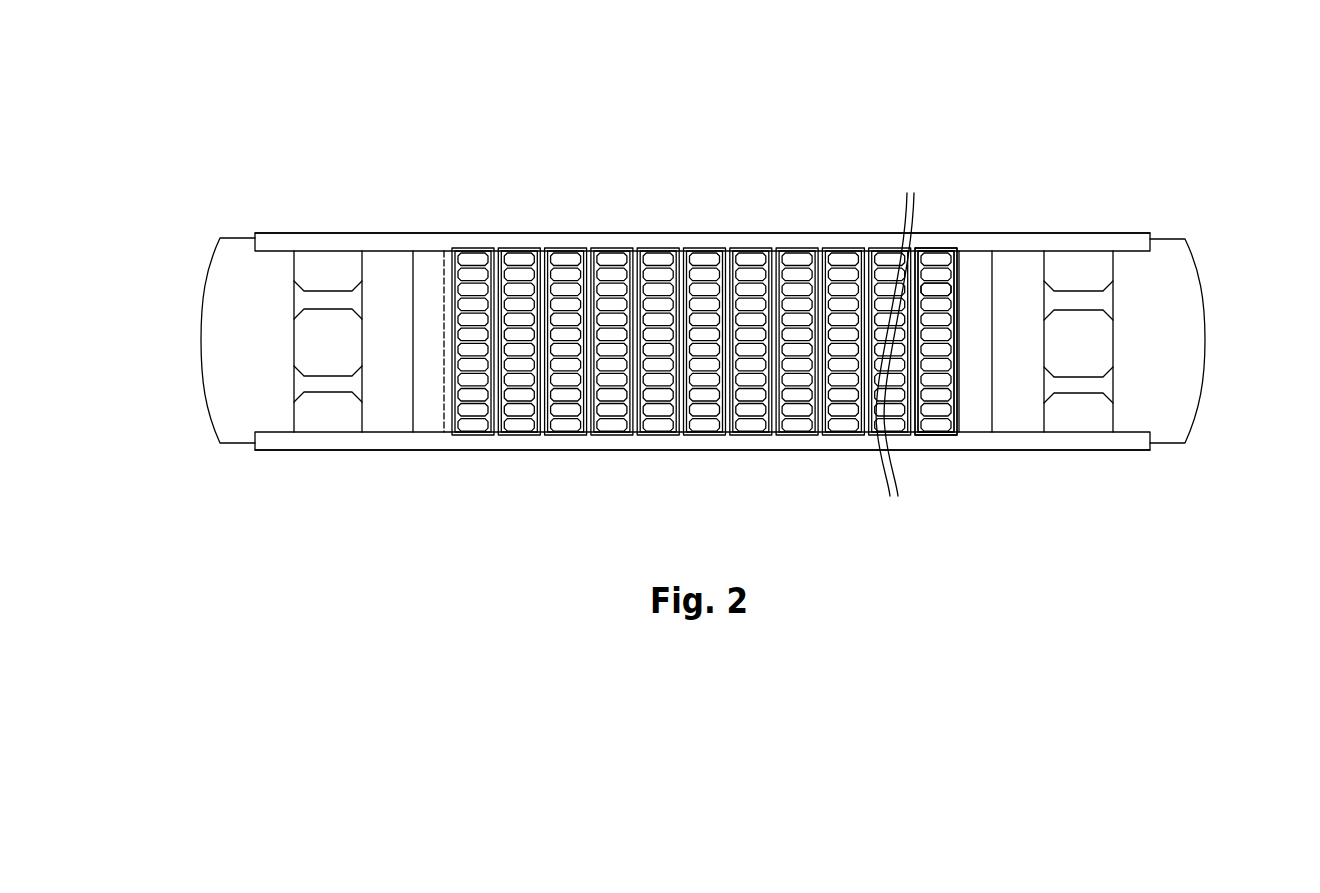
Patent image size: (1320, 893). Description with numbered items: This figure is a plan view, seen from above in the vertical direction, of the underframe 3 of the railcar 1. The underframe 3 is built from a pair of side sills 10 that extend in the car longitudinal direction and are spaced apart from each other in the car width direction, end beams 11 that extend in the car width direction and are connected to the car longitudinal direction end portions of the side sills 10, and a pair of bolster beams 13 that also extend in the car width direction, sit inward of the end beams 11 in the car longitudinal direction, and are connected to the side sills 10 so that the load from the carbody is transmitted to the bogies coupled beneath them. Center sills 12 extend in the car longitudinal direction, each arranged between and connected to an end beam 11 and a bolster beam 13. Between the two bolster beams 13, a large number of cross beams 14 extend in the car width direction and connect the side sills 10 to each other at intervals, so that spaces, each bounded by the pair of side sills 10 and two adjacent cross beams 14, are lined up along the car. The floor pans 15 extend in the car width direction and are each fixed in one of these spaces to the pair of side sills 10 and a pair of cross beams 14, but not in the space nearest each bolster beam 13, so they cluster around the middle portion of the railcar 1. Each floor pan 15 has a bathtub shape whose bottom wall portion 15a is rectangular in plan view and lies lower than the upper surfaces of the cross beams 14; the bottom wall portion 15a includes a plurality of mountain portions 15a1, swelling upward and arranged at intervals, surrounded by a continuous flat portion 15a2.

The railcar 1 is at (1165, 100).
The underframe 3 is at (1189, 227).
The side sill 10 is at (275, 232).
The end beam 11 is at (207, 283).
The center sill 12 is at (335, 290).
The bolster beam 13 is at (414, 282).
The cross beam 14 is at (447, 402).
The floor pan 15 is at (478, 248).
The bottom wall portion 15a is at (955, 287).
The mountain portion 15a1 is at (944, 254).
The continuous flat portion 15a2 is at (951, 270).